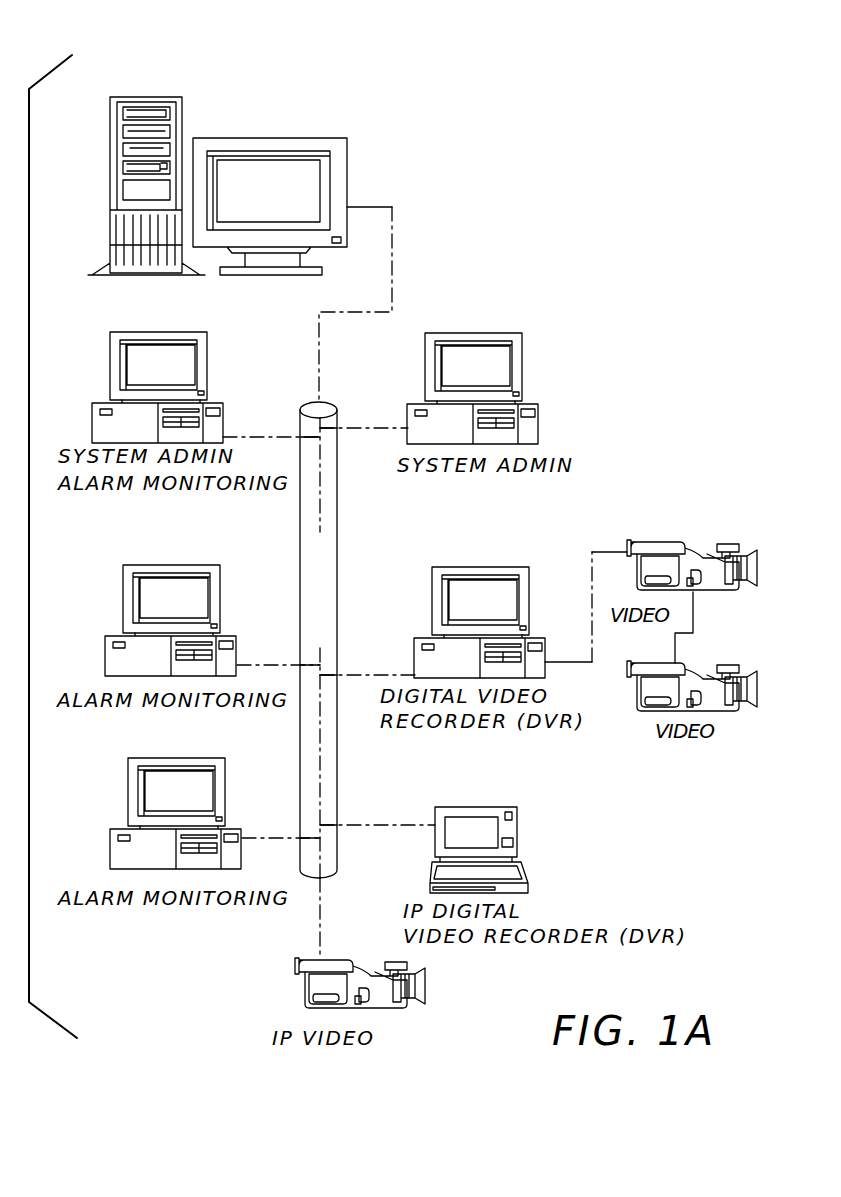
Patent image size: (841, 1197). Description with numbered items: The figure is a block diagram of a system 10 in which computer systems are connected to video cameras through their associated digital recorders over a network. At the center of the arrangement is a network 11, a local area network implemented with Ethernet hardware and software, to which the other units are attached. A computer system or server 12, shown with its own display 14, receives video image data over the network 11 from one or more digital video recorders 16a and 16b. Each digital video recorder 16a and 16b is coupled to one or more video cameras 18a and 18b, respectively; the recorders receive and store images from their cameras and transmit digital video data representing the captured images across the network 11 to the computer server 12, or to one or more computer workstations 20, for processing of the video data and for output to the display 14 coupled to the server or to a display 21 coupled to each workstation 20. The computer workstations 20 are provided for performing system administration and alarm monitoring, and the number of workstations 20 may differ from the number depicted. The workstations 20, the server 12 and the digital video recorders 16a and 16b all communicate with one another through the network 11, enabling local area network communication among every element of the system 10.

The system 10 is at (498, 162).
The network 11 is at (340, 810).
The computer system or server 12 is at (182, 106).
The display 14 is at (268, 147).
The digital video recorder 16a is at (472, 567).
The digital video recorder 16b is at (517, 832).
The video camera 18a is at (690, 550).
The video camera 18b is at (302, 992).
The computer workstation 20 is at (320, 569).
The display 21 is at (316, 547).